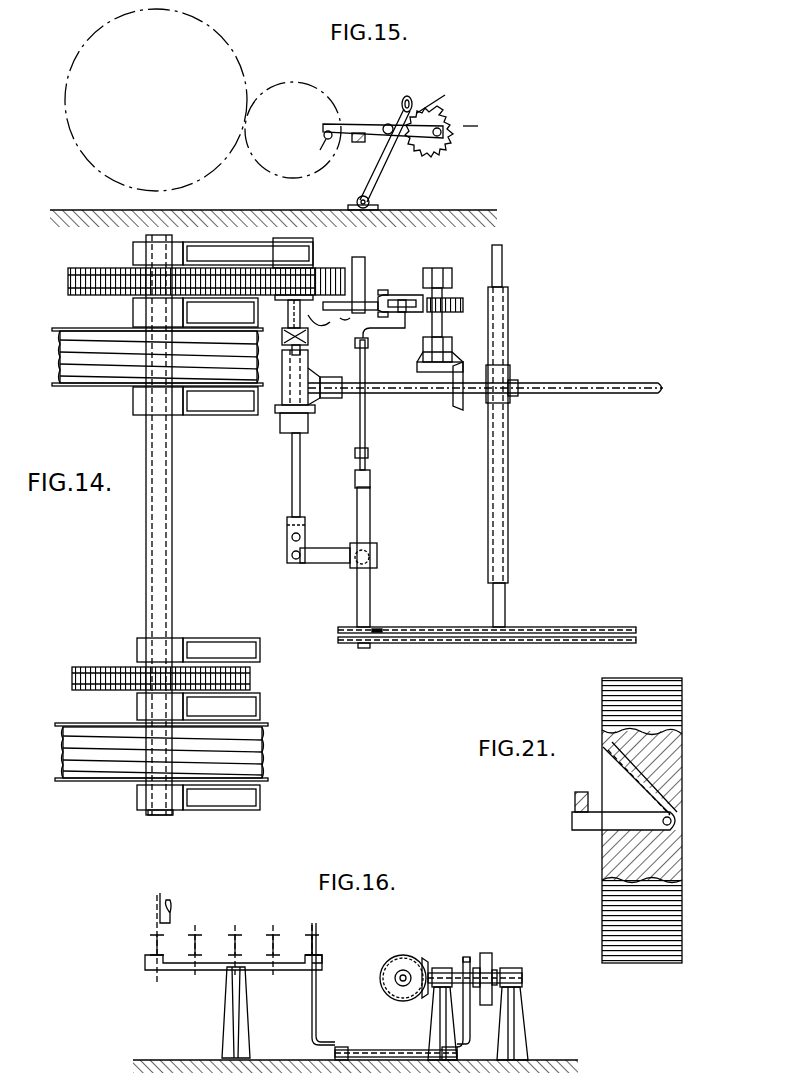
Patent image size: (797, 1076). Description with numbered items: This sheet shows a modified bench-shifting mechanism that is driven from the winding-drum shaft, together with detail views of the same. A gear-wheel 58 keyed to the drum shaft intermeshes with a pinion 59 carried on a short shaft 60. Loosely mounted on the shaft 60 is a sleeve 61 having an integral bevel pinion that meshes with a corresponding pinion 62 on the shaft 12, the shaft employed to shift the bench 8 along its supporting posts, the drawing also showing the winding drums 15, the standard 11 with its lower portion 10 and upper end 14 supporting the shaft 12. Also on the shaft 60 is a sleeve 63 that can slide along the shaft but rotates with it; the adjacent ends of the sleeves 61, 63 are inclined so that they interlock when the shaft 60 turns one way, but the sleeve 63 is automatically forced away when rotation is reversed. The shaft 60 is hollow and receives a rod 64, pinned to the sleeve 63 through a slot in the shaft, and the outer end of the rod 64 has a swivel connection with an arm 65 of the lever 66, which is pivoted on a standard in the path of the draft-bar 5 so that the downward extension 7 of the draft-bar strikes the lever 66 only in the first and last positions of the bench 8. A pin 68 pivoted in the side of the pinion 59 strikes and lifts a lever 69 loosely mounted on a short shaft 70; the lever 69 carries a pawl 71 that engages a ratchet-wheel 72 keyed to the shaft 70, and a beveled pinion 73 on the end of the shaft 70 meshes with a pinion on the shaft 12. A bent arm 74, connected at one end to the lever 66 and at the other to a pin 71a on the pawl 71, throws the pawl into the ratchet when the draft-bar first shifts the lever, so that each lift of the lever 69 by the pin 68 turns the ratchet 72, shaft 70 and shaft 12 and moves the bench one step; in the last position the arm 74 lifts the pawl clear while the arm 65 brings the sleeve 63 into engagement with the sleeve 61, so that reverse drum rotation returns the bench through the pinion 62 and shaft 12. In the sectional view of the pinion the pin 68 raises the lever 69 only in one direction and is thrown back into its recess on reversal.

In FIG. 16, the draft-bar 5 is at (158, 906).
In FIG. 14, the downward extension 7 is at (380, 631).
In FIG. 16, the downward extension 7 is at (155, 968).
In FIG. 14, the bench 8 is at (575, 627).
In FIG. 16, the bench 8 is at (150, 946).
In FIG. 14, the post lower portion 10 is at (505, 603).
In FIG. 14, the standard post 11 is at (508, 535).
In FIG. 14, the shaft 12 is at (570, 383).
In FIG. 16, the shaft 12 is at (398, 982).
In FIG. 14, the post upper end 14 is at (502, 275).
In FIG. 14, the drum 15 is at (60, 362).
In FIG. 15, the gear-wheel 58 is at (156, 100).
In FIG. 14, the gear-wheel 58 is at (68, 283).
In FIG. 15, the pinion 59 is at (293, 130).
In FIG. 14, the pinion 59 is at (335, 270).
In FIG. 21, the pinion 59 is at (683, 778).
In FIG. 14, the short shaft 60 is at (325, 325).
In FIG. 14, the sleeve 61 is at (298, 378).
In FIG. 14, the pinion 62 is at (322, 383).
In FIG. 14, the sleeve 63 is at (288, 334).
In FIG. 14, the rod 64 is at (300, 465).
In FIG. 14, the arm 65 is at (292, 350).
In FIG. 14, the lever 66 is at (370, 524).
In FIG. 16, the lever 66 is at (273, 965).
In FIG. 15, the pin 68 is at (315, 149).
In FIG. 14, the pin 68 is at (350, 320).
In FIG. 21, the pin 68 is at (590, 830).
In FIG. 15, the lever 69 is at (383, 118).
In FIG. 14, the lever 69 is at (378, 298).
In FIG. 21, the lever 69 is at (575, 805).
In FIG. 16, the lever 69 is at (500, 972).
In FIG. 15, the short shaft 70 is at (447, 148).
In FIG. 14, the short shaft 70 is at (442, 325).
In FIG. 16, the short shaft 70 is at (448, 968).
In FIG. 15, the pawl 71 is at (402, 106).
In FIG. 14, the pawl 71 is at (402, 302).
In FIG. 15, the pin 71a is at (441, 94).
In FIG. 14, the pin 71a is at (405, 328).
In FIG. 16, the pin 71a is at (470, 957).
In FIG. 15, the ratchet-wheel 72 is at (483, 129).
In FIG. 14, the ratchet-wheel 72 is at (460, 300).
In FIG. 16, the ratchet-wheel 72 is at (486, 1005).
In FIG. 14, the beveled pinion 73 is at (417, 368).
In FIG. 16, the beveled pinion 73 is at (424, 960).
In FIG. 14, the bent arm 74 is at (366, 418).
In FIG. 16, the bent arm 74 is at (390, 1050).